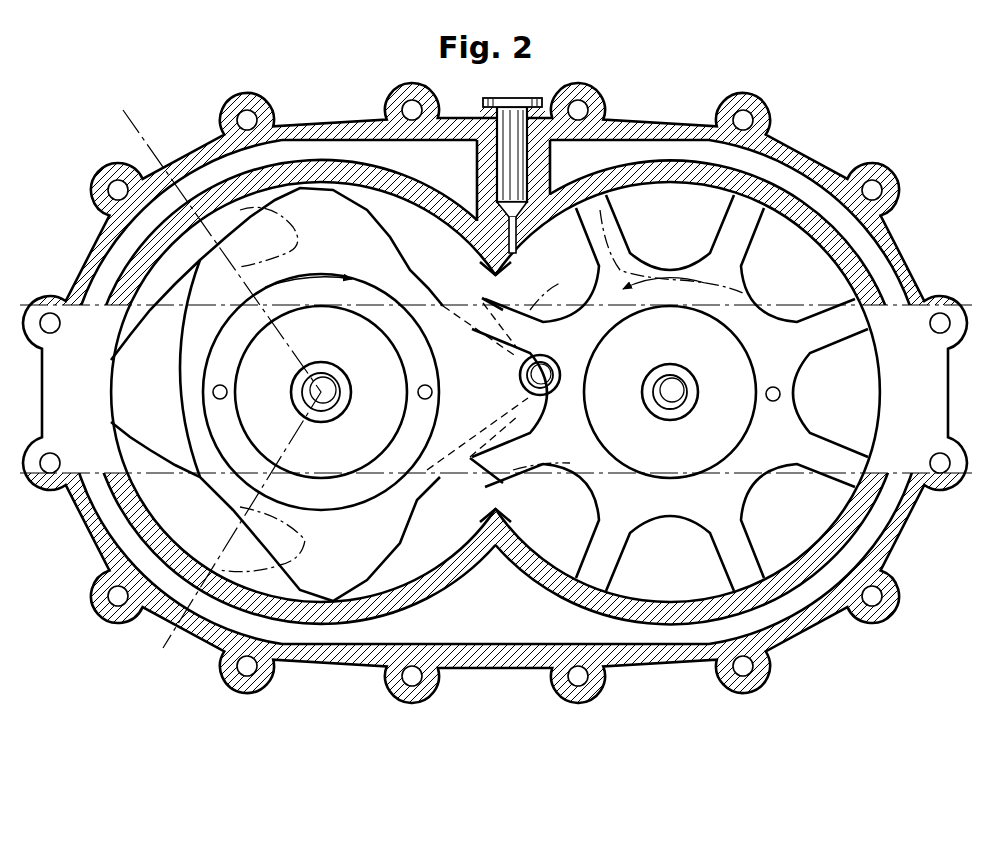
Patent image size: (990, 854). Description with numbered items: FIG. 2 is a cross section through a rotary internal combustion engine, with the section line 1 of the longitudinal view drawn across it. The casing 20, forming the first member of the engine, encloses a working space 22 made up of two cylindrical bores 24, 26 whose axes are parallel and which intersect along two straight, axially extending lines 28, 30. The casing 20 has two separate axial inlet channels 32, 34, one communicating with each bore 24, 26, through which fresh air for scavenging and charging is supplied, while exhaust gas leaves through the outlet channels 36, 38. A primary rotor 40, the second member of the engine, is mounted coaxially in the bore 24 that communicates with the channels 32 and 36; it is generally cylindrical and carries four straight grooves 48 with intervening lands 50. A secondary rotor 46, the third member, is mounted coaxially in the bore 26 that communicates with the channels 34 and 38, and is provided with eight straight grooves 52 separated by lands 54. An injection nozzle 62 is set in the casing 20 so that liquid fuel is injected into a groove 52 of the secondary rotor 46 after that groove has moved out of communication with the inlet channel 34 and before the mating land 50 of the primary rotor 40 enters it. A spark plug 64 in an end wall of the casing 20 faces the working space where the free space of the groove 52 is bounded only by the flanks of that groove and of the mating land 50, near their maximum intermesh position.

The section line 1— 1 is at (123, 110).
The casing 20 is at (624, 129).
The working space 22 is at (575, 205).
The cylindrical bore 24 is at (393, 197).
The cylindrical bore 26 is at (688, 190).
The intersecting line 28 is at (488, 281).
The intersecting line 30 is at (493, 510).
The inlet channel 32 is at (150, 260).
The inlet channel 34 is at (738, 207).
The outlet channel 36 is at (97, 535).
The outlet channel 38 is at (820, 523).
The primary rotor 40 is at (410, 291).
The secondary rotor 46 is at (655, 292).
The grooves 48 is at (437, 255).
The lands 50 is at (268, 247).
The grooves 52 is at (545, 300).
The lands 54 is at (605, 272).
The injection nozzle 62 is at (510, 168).
The spark plug 64 is at (520, 372).